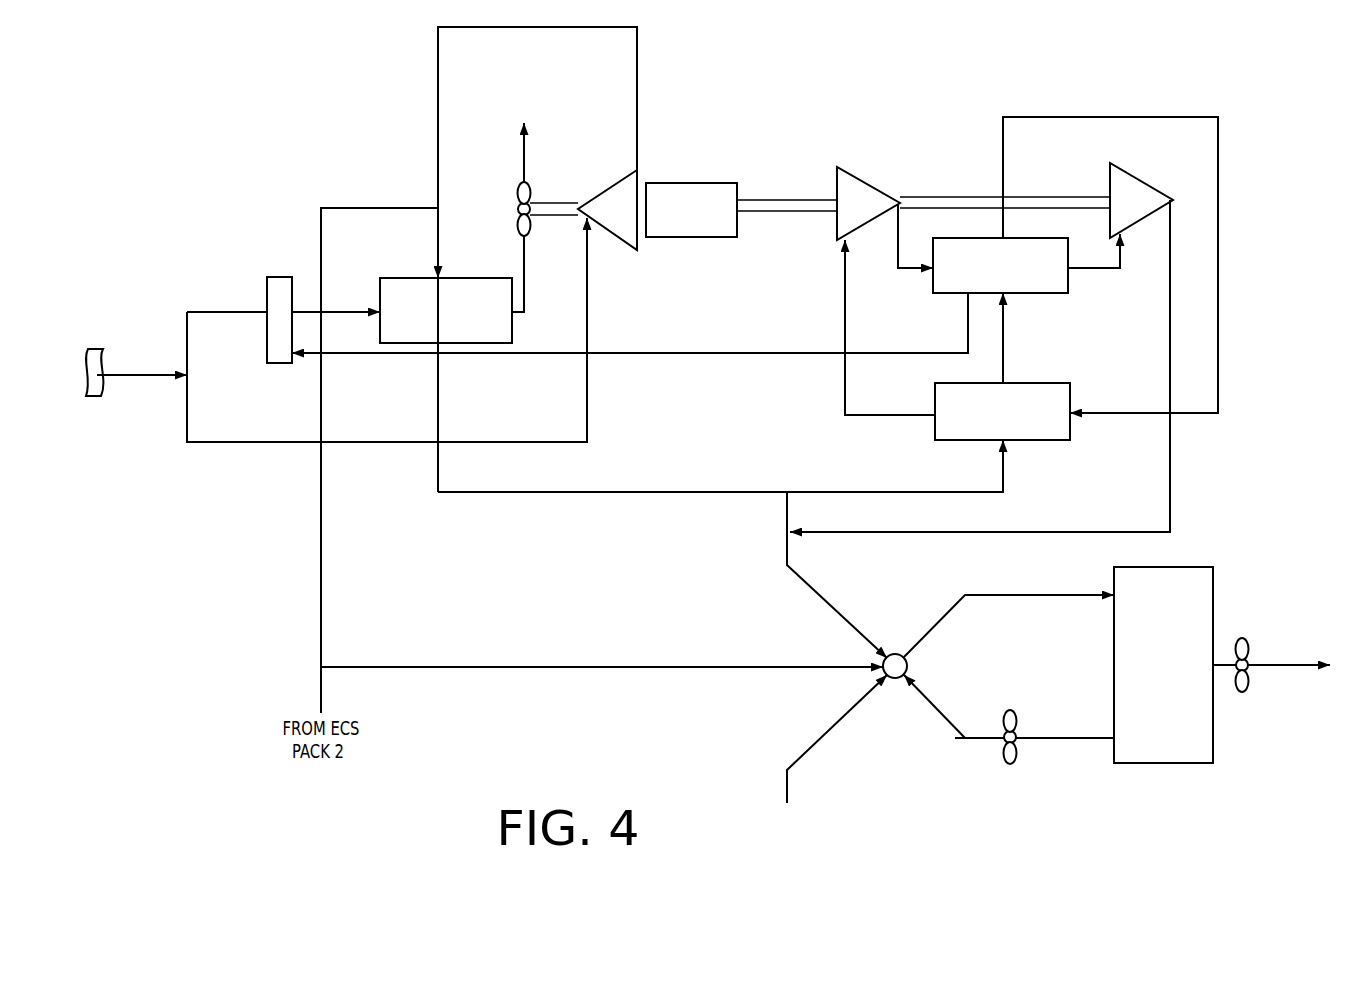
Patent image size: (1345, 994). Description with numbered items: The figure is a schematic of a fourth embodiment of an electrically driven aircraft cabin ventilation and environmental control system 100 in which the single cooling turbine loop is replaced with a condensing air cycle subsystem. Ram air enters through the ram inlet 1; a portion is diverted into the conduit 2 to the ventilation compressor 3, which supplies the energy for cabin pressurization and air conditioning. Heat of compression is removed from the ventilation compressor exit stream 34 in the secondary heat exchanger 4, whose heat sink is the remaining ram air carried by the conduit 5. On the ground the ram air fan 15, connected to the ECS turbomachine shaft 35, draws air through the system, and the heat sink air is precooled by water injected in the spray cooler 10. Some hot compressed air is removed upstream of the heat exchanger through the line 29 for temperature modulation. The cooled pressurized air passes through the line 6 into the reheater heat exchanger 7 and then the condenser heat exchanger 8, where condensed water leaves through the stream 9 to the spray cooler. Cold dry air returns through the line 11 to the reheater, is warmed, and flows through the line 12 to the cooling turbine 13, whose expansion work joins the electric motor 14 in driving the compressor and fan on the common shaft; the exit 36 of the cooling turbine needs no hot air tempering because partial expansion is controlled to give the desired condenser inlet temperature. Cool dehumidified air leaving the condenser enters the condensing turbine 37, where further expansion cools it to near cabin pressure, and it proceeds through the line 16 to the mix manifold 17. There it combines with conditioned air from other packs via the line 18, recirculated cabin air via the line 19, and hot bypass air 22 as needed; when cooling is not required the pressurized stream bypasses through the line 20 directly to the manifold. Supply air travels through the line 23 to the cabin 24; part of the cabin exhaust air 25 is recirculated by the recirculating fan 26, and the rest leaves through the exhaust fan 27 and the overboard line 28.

The electrically driven aircraft cabin ventilation and environmental control system 100 is at (762, 72).
The ram inlet 1 is at (136, 372).
The conduit 2 is at (228, 442).
The ventilation compressor 3 is at (613, 198).
The secondary heat exchanger 4 is at (472, 343).
The conduit 5 is at (212, 312).
The line 6 is at (622, 492).
The reheater heat exchanger 7 is at (1035, 440).
The condenser heat exchanger 8 is at (1055, 290).
The stream 9 is at (780, 355).
The spray cooler 10 is at (283, 288).
The line 11 is at (1090, 117).
The line 12 is at (900, 418).
The cooling turbine 13 is at (850, 183).
The electric motor 14 is at (698, 238).
The ram air fan 15 is at (518, 188).
The line 16 is at (1120, 530).
The mix manifold 17 is at (907, 664).
The line 18 is at (825, 735).
The line 19 is at (938, 720).
The line 20 is at (786, 520).
The hot bypass air 22 is at (776, 663).
The line 23 is at (945, 618).
The cabin 24 is at (1198, 570).
The cabin exhaust air 25 is at (1070, 738).
The recirculating fan 26 is at (1005, 760).
The exhaust fan 27 is at (1243, 690).
The overboard line 28 is at (1297, 665).
The line 29 is at (365, 208).
The ventilation compressor exit stream 34 is at (497, 27).
The ECS turbomachine shaft 35 is at (818, 201).
The exit 36 is at (900, 220).
The condensing turbine 37 is at (1138, 190).